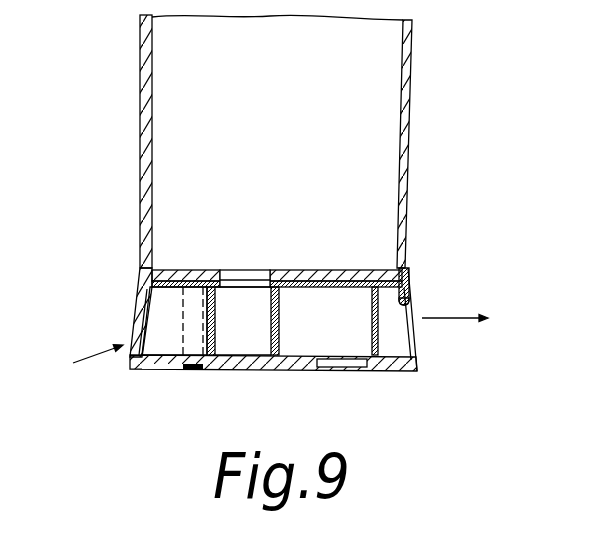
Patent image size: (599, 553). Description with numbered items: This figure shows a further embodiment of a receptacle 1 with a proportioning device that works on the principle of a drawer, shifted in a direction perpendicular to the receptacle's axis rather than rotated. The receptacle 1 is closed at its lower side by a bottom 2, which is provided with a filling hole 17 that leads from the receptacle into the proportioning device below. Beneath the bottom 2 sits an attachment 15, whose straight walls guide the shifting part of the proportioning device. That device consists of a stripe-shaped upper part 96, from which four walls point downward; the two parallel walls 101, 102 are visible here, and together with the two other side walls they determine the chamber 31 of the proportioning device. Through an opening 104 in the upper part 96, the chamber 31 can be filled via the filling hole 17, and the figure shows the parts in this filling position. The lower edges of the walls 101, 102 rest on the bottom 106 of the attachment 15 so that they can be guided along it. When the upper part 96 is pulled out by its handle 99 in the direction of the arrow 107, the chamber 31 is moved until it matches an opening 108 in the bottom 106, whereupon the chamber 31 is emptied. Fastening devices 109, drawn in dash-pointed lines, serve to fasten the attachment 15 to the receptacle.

The receptacle 1 is at (410, 142).
The bottom 2 is at (352, 270).
The attachment 15 is at (85, 361).
The filling hole 17 is at (237, 275).
The chamber 31 is at (252, 335).
The upper part 96 is at (400, 269).
The handle 99 is at (410, 302).
The wall 101 is at (214, 335).
The wall 102 is at (281, 325).
The opening 104 is at (256, 285).
The bottom 106 is at (297, 365).
The arrow 107 is at (455, 322).
The opening 108 is at (355, 364).
The fastening devices 109 is at (190, 330).